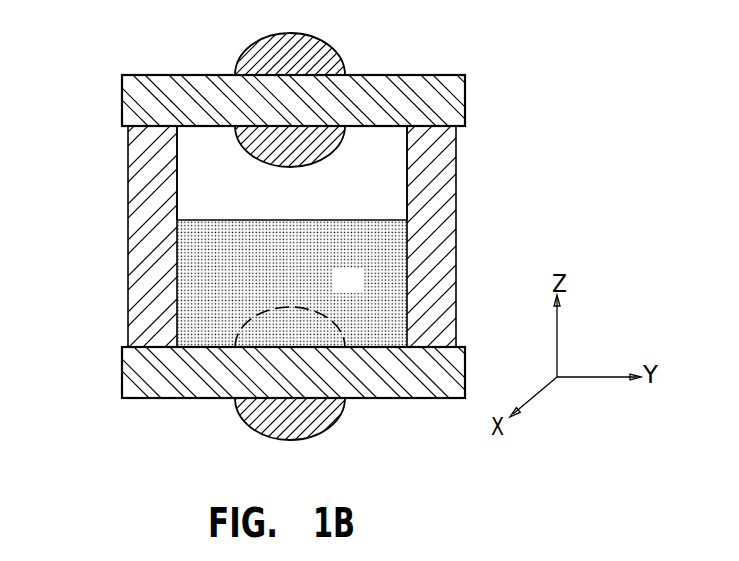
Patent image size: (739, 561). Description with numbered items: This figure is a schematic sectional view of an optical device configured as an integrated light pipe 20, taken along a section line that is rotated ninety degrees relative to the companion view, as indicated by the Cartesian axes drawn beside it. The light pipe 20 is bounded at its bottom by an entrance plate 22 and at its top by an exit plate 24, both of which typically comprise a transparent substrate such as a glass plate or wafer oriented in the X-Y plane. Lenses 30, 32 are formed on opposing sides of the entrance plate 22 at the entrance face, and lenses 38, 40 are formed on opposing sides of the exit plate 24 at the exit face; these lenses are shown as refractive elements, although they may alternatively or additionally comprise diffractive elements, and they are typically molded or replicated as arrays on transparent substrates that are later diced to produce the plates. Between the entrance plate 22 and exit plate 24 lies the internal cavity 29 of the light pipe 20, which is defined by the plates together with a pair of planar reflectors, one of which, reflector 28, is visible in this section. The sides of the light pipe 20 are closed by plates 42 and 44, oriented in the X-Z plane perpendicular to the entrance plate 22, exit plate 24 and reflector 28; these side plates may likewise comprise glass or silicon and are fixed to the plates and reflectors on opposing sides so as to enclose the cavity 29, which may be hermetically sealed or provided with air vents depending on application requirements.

The integrated light pipe 20 is at (493, 53).
The entrance plate 22 is at (158, 399).
The exit plate 24 is at (157, 75).
The planar reflector 28 is at (338, 220).
The internal cavity 29 is at (305, 205).
The lens 30 is at (282, 440).
The lens 32 is at (303, 307).
The lens 38 is at (263, 152).
The lens 40 is at (257, 47).
The side plate 42 is at (441, 222).
The side plate 44 is at (140, 220).